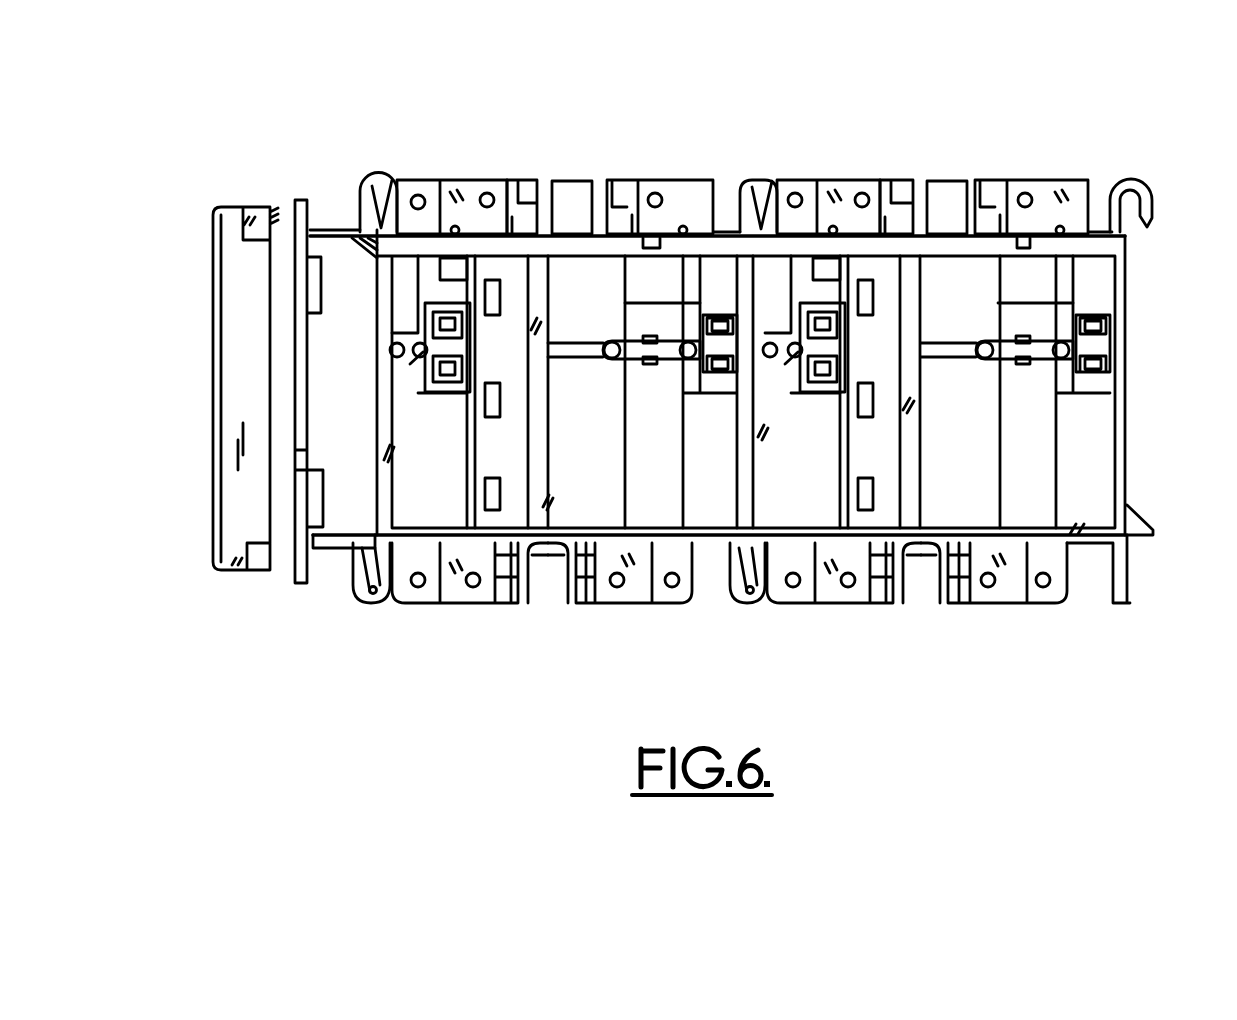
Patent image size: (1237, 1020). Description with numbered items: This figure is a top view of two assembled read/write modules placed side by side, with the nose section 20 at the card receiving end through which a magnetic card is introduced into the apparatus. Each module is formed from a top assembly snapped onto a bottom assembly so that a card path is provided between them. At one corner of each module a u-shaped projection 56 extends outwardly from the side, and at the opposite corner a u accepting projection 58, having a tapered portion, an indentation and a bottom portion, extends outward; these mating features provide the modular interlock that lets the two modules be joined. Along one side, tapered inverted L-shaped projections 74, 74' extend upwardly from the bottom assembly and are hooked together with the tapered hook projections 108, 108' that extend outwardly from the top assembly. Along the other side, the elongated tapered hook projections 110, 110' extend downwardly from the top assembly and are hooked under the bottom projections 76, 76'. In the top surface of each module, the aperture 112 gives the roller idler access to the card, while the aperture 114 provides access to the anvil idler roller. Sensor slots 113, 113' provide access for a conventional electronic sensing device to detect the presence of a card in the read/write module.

The nose section 20 is at (243, 207).
The u-shaped projection 56 is at (379, 195).
The u accepting projection 58 is at (365, 222).
The tapered inverted L-shaped projection 74 is at (715, 180).
The tapered inverted L-shaped projection 74' is at (780, 159).
The bottom projection 76 is at (642, 614).
The bottom projection 76' is at (821, 595).
The tapered hook projection 108 is at (648, 159).
The tapered hook projection 108' is at (859, 179).
The elongated tapered hook projection 110 is at (737, 632).
The elongated tapered hook projection 110' is at (781, 605).
The aperture 112 is at (648, 424).
The sensor slot 113 is at (605, 354).
The sensor slot 113' is at (624, 340).
The aperture 114 is at (648, 287).